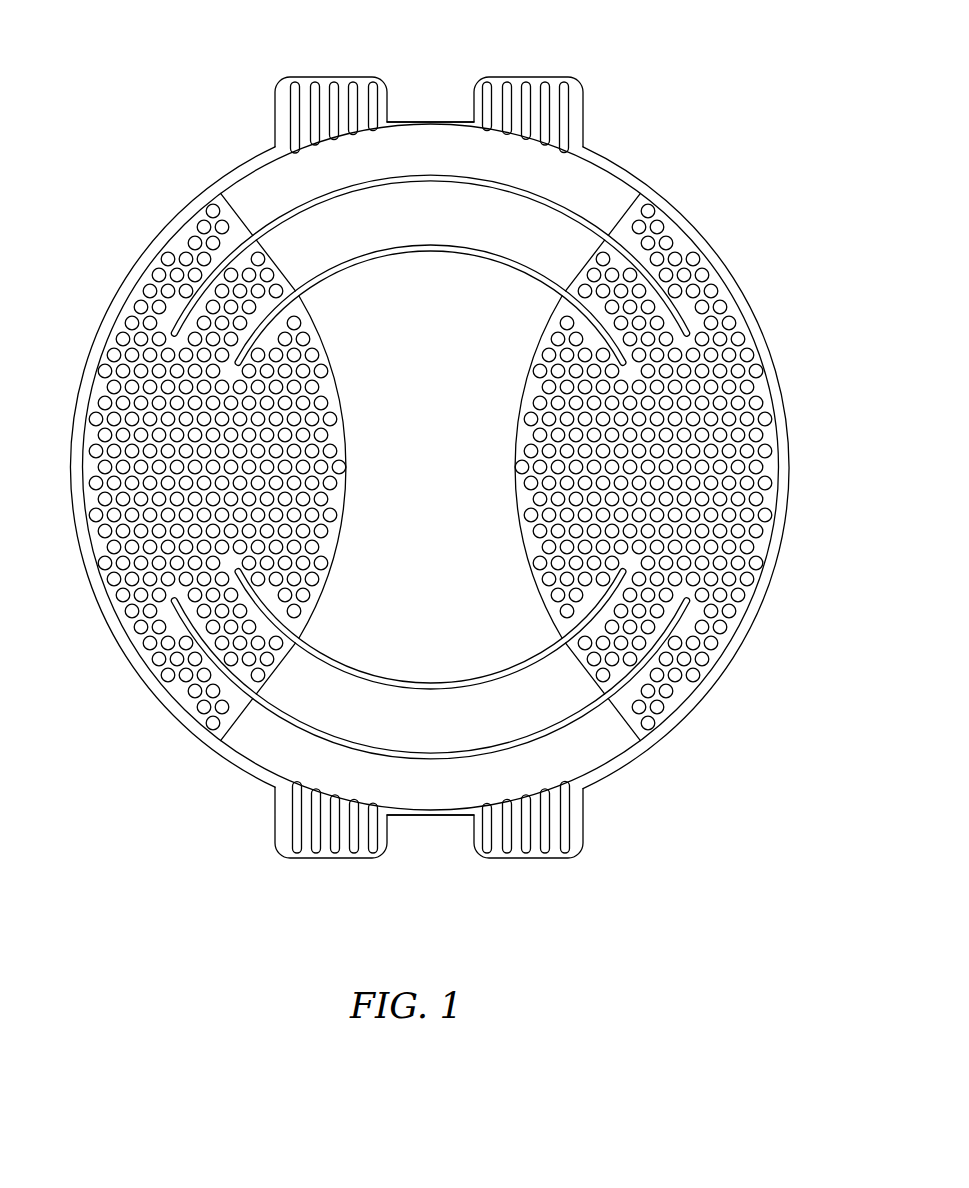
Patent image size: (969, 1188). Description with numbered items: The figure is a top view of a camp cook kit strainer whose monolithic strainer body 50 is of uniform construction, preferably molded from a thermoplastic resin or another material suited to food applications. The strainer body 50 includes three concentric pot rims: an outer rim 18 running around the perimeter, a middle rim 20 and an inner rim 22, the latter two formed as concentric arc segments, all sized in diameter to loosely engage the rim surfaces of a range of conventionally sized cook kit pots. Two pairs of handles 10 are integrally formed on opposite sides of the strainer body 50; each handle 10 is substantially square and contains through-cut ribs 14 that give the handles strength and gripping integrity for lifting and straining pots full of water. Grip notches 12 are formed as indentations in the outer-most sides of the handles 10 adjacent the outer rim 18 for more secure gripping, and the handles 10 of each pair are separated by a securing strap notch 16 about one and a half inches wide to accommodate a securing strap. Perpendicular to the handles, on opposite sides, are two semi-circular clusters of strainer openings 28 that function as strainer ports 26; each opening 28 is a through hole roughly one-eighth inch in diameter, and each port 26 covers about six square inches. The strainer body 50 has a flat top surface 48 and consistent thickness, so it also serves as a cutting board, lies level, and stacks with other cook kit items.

The strainer body 50 is at (172, 181).
The handle 10 is at (439, 458).
The grip notch 12 is at (273, 106).
The through-cut rib 14 is at (352, 82).
The securing strap notch 16 is at (440, 120).
The outer rim 18 is at (784, 550).
The middle rim 20 is at (412, 178).
The inner rim 22 is at (432, 250).
The strainer port 26 is at (422, 466).
The strainer opening 28 is at (147, 282).
The flat top surface 48 is at (442, 467).